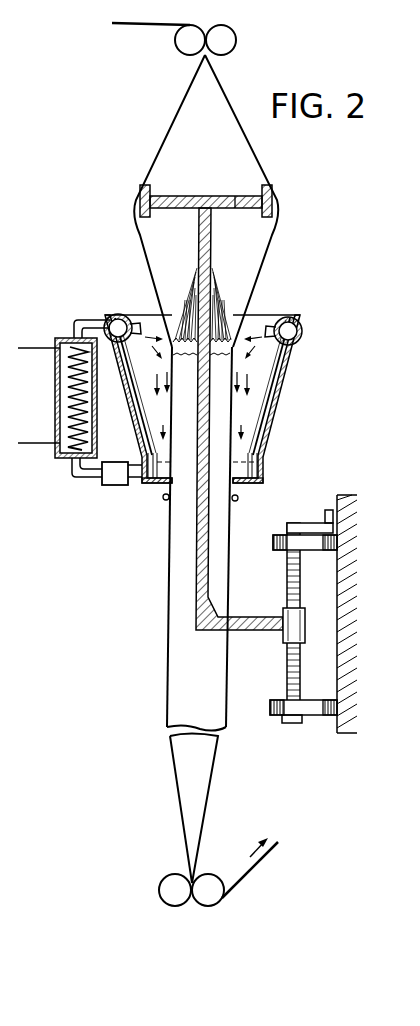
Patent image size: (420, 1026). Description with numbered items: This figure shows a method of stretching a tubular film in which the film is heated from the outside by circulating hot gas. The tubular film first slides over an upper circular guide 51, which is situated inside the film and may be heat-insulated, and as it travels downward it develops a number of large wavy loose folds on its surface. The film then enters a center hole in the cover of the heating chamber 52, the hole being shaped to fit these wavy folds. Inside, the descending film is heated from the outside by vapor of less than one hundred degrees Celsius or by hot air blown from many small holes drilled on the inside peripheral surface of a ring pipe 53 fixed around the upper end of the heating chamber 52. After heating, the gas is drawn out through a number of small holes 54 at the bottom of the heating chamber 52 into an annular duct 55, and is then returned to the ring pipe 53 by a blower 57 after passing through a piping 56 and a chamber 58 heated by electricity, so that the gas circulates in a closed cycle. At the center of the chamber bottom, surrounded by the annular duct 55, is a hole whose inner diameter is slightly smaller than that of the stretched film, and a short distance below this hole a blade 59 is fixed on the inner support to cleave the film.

The upper circular guide 51 is at (196, 196).
The heating chamber 52 is at (280, 408).
The ring pipe 53 is at (128, 305).
The small holes 54 is at (245, 458).
The annular duct 55 is at (254, 477).
The piping 56 is at (133, 480).
The blower 57 is at (107, 487).
The chamber heated by electricity 58 is at (55, 426).
The blade 59 is at (204, 488).